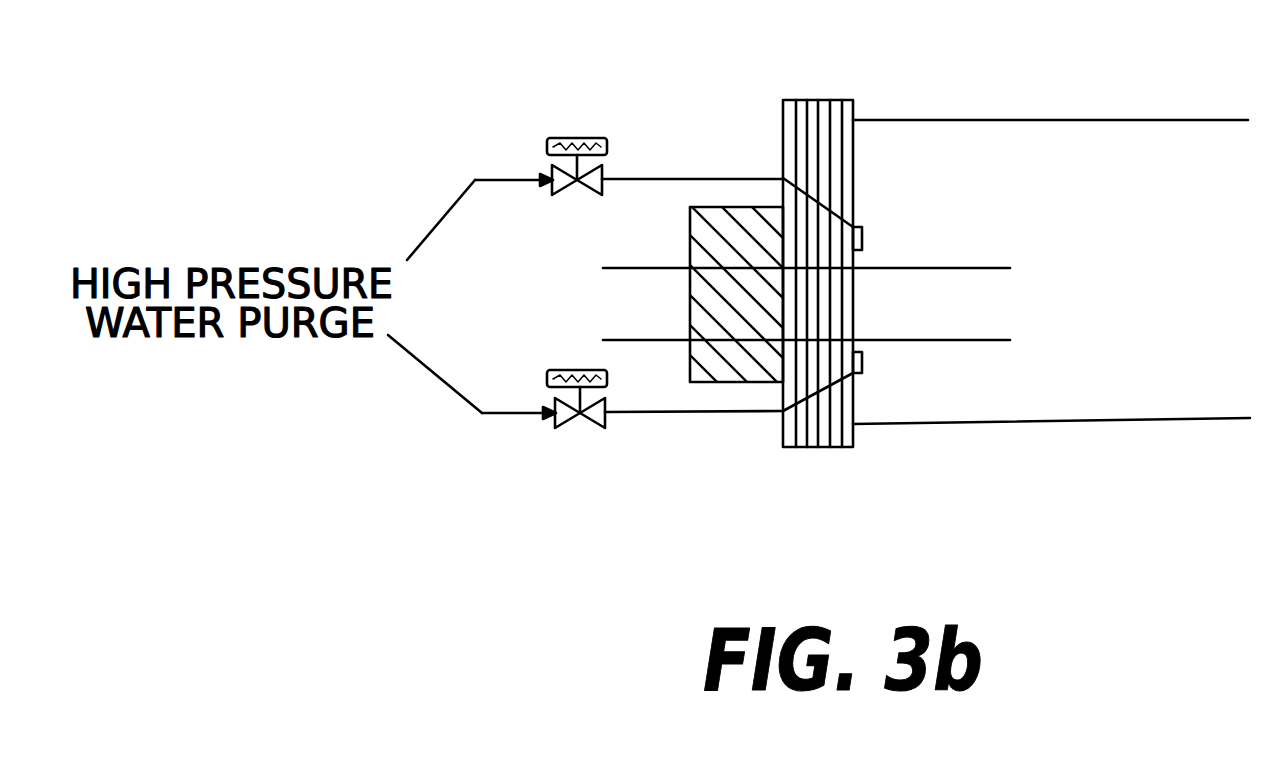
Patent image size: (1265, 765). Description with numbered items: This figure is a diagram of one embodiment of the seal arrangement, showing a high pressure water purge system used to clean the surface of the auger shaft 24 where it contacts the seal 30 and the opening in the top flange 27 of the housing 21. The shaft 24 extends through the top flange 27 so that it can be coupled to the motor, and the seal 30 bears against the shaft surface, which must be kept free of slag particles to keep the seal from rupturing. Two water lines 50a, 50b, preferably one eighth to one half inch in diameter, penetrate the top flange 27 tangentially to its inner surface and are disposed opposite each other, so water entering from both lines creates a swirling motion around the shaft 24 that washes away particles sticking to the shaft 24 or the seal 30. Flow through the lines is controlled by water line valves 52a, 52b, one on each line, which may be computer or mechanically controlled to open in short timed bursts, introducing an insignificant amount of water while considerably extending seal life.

The housing 21 is at (1083, 422).
The shaft 24 is at (913, 312).
The top flange 27 is at (820, 447).
The seal 30 is at (720, 227).
The water line 50a is at (737, 178).
The water line 50b is at (703, 413).
The water line valve 52a is at (560, 138).
The water line valve 52b is at (565, 430).